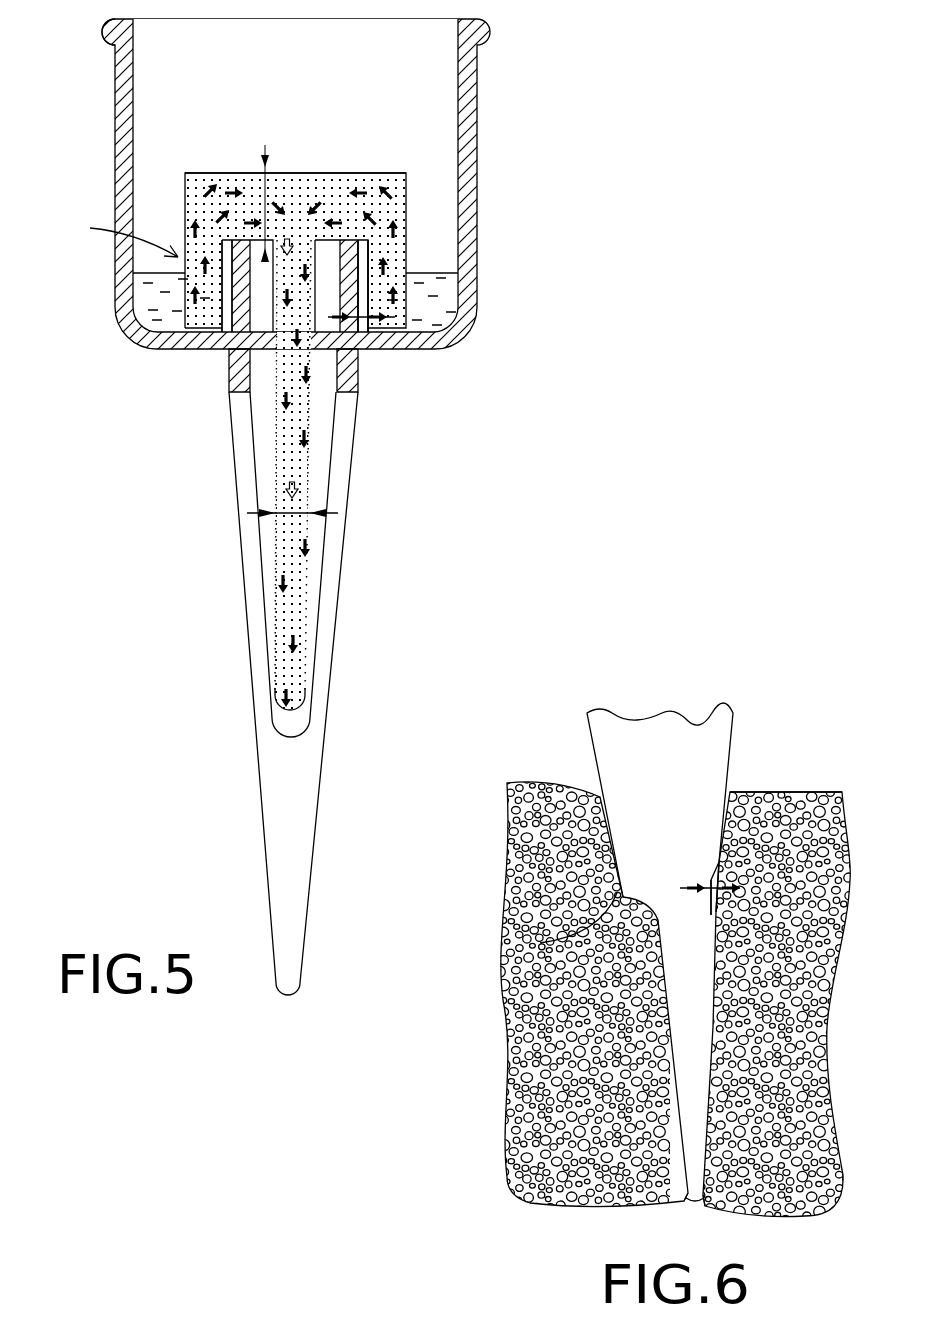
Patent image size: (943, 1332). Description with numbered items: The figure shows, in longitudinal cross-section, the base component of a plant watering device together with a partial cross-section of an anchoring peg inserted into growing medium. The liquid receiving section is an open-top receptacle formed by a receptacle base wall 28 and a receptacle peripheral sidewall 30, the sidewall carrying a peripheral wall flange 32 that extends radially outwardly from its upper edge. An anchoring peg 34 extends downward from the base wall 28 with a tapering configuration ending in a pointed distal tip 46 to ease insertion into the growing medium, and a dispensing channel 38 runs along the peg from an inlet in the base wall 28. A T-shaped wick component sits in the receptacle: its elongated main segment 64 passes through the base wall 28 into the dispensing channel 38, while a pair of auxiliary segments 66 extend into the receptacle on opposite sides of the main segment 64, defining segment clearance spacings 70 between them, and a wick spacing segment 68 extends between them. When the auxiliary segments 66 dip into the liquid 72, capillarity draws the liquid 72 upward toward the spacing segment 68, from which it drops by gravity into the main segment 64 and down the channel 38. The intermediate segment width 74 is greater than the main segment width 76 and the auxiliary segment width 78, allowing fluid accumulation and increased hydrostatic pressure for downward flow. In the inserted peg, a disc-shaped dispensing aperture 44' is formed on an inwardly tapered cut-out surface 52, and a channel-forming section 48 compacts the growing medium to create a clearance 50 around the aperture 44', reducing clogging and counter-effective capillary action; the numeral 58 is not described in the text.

In FIG. 5, the receptacle base wall 28 is at (410, 350).
In FIG. 5, the receptacle peripheral sidewall 30 is at (123, 132).
In FIG. 5, the peripheral wall flange 32 is at (108, 22).
In FIG. 5, the anchoring peg 34 is at (302, 869).
In FIG. 5, the dispensing channel 38 is at (336, 374).
In FIG. 6, the pointed distal tip 46 is at (687, 1188).
In FIG. 6, the channel-forming section 48 is at (598, 943).
In FIG. 6, the clearance 50 is at (717, 890).
In FIG. 6, the inwardly tapered cut-out surface 52 is at (720, 858).
In FIG. 5, the tube passage wall 58 is at (357, 283).
In FIG. 5, the main segment 64 is at (305, 477).
In FIG. 5, the auxiliary segments 66 is at (388, 212).
In FIG. 5, the wick spacing segment 68 is at (323, 176).
In FIG. 5, the segment clearance spacings 70 is at (227, 280).
In FIG. 5, the liquid 72 is at (128, 333).
In FIG. 5, the intermediate segment width 74 is at (263, 197).
In FIG. 5, the main segment width 76 is at (293, 516).
In FIG. 5, the auxiliary segment width 78 is at (120, 230).
In FIG. 6, the dispensing aperture 44' is at (786, 1005).